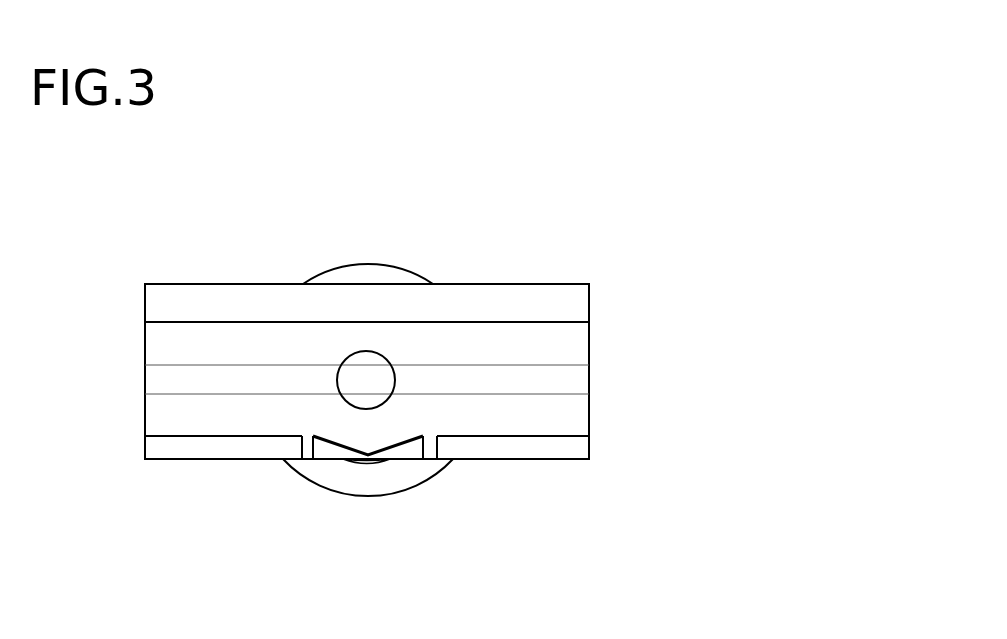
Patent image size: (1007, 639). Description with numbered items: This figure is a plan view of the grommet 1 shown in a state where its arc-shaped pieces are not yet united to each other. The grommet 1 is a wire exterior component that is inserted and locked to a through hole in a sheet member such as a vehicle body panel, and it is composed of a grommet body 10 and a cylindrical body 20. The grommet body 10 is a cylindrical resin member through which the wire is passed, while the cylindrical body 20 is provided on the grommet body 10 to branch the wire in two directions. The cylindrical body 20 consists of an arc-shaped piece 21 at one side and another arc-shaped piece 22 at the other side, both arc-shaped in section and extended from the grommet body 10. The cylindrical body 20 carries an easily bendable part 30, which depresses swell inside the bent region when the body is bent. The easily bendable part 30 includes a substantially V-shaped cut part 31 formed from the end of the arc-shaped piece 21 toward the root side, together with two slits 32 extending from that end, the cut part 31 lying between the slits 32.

The grommet 1 is at (553, 202).
The grommet body 10 is at (308, 477).
The cylindrical body 20 is at (242, 288).
The arc-shaped piece 21 is at (552, 445).
The arc-shaped piece 22 is at (575, 310).
The easily bendable part 30 is at (362, 473).
The cut part 31 is at (393, 440).
The slits 32 is at (300, 438).